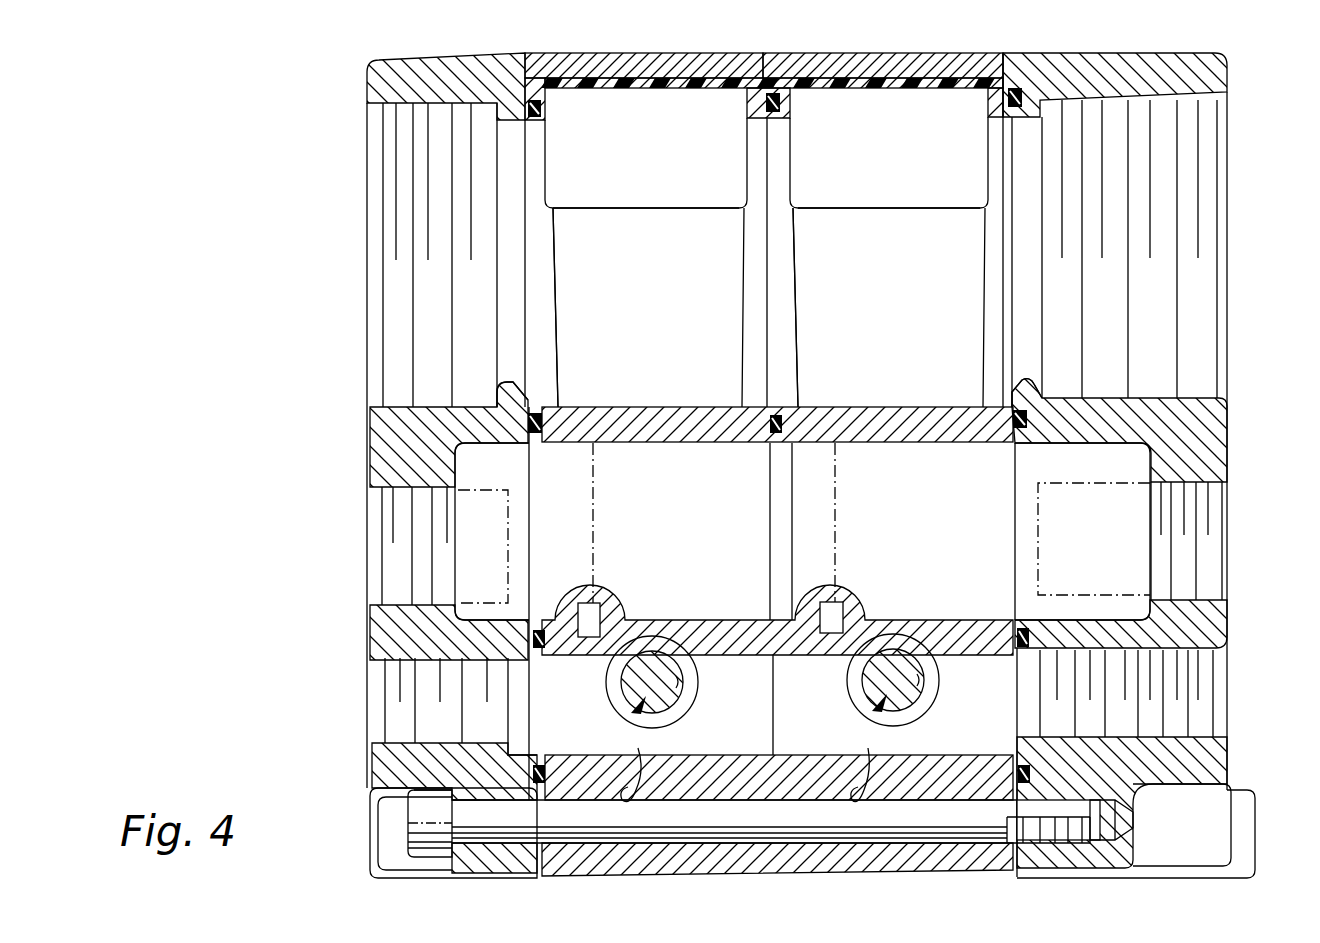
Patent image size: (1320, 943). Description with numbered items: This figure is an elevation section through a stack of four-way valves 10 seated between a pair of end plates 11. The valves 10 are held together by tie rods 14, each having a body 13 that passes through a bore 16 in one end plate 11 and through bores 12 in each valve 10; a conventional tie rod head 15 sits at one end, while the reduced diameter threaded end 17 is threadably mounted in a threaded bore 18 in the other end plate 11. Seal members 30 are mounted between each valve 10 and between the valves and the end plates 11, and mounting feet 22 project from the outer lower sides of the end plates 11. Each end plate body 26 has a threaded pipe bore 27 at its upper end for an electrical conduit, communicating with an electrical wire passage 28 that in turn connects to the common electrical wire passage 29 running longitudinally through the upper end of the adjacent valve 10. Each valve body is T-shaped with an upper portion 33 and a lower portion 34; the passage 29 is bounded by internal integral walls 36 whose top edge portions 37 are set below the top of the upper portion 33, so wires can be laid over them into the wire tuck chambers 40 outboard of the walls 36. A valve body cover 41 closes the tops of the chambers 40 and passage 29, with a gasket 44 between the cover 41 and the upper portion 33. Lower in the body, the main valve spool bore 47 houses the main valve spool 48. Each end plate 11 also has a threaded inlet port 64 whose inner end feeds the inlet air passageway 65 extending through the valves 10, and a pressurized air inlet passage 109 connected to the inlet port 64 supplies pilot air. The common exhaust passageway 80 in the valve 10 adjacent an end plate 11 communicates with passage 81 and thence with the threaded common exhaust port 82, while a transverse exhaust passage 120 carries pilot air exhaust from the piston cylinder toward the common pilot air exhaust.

The four-way valve 10 is at (753, 443).
The end plate 11 is at (432, 50).
The bore 12 is at (748, 762).
The tie rod body 13 is at (725, 810).
The tie rod 14 is at (388, 838).
The tie rod head 15 is at (428, 805).
The bore 16 is at (478, 803).
The threaded end 17 is at (1048, 813).
The threaded bore 18 is at (1133, 812).
The mounting foot 22 is at (370, 810).
The end plate body 26 is at (393, 450).
The threaded pipe bore 27 is at (410, 103).
The electrical wire passage 28 is at (523, 122).
The common electrical wire passage 29 is at (622, 298).
The seal member 30 is at (541, 108).
The valve body upper portion 33 is at (755, 330).
The valve body lower portion 34 is at (562, 860).
The internal integral wall 36 is at (672, 232).
The top edge portion 37 is at (613, 207).
The electrical wire tuck chamber 40 is at (642, 163).
The valve body cover 41 is at (700, 54).
The gasket 44 is at (598, 82).
The main valve spool bore 47 is at (699, 690).
The main valve spool 48 is at (638, 704).
The threaded inlet port 64 is at (425, 660).
The inlet air passageway 65 is at (667, 755).
The common exhaust passageway 80 is at (697, 538).
The passage 81 is at (490, 447).
The common exhaust port 82 is at (413, 490).
The pressurized air inlet passage 109 is at (517, 753).
The transverse exhaust passage 120 is at (600, 614).